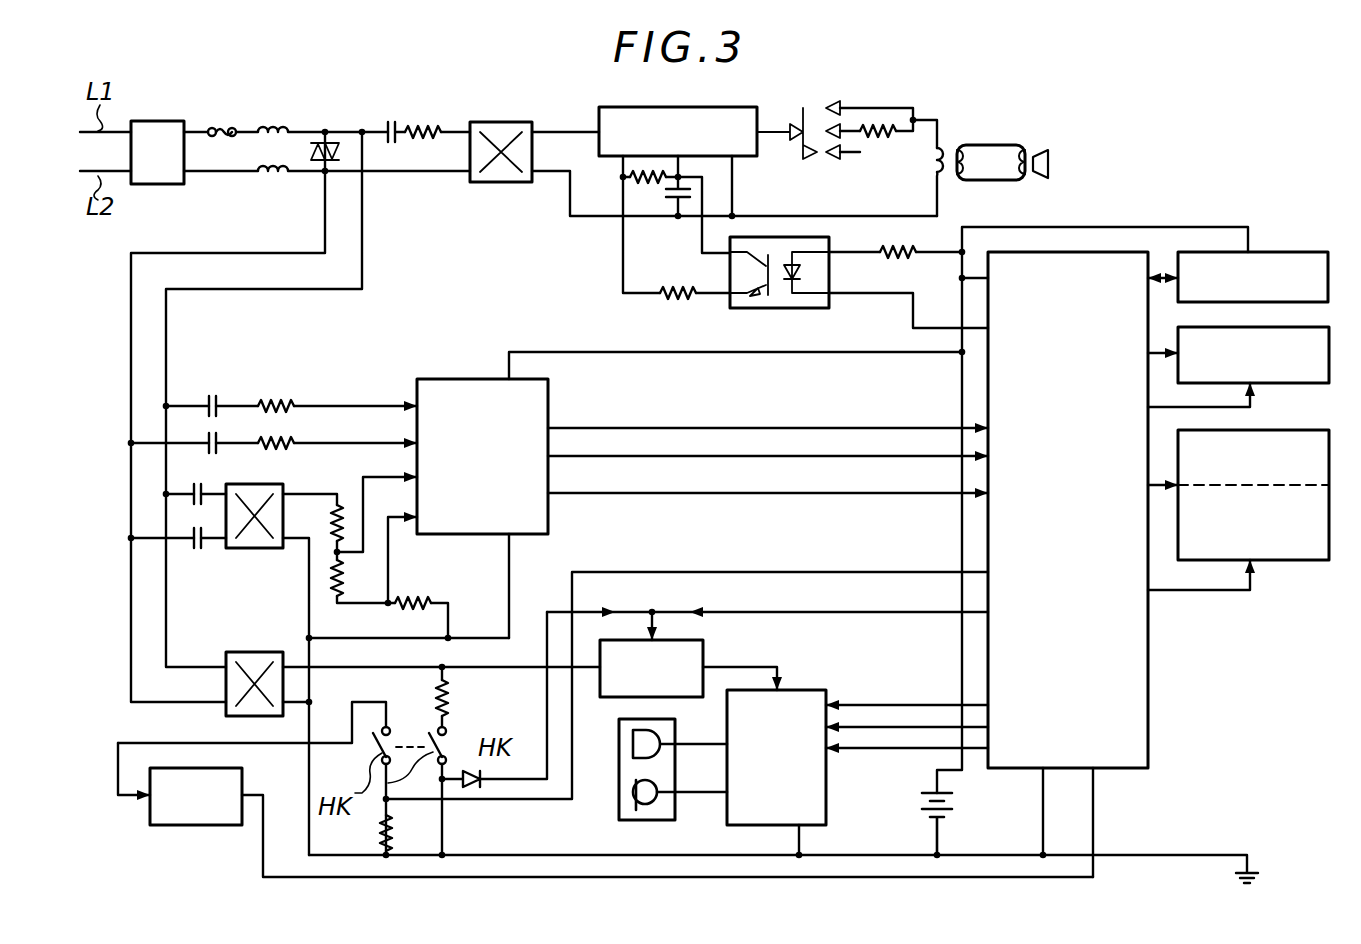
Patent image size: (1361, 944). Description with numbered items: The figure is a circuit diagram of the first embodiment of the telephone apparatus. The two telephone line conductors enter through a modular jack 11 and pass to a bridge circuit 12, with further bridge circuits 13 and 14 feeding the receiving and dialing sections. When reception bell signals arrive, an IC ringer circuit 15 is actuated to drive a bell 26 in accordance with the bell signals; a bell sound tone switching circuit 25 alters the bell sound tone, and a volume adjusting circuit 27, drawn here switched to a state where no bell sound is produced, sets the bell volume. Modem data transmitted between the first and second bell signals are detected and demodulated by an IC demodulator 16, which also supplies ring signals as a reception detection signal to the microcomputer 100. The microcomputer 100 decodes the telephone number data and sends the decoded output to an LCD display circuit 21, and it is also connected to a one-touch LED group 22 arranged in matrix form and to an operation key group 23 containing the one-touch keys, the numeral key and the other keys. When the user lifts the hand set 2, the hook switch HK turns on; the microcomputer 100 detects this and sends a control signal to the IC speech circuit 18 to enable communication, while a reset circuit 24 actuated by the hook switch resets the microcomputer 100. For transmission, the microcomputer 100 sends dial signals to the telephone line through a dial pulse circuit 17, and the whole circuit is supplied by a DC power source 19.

The hand set 2 is at (619, 790).
The modular jack 11 is at (172, 184).
The bridge circuit 12 is at (503, 182).
The bridge circuit 13 is at (258, 548).
The bridge circuit 14 is at (254, 652).
The ringer circuit 15 is at (748, 156).
The demodulator 16 is at (548, 522).
The dial pulse circuit 17 is at (703, 645).
The speech circuit 18 is at (815, 690).
The DC power source 19 is at (922, 808).
The LCD display circuit 21 is at (1286, 251).
The one-touch LED group 22 is at (1291, 383).
The operation key group 23 is at (1283, 560).
The reset circuit 24 is at (208, 825).
The bell sound tone switching circuit 25 is at (803, 308).
The bell 26 is at (1052, 168).
The bell sound volume adjusting circuit 27 is at (828, 160).
The microcomputer 100 is at (1150, 668).